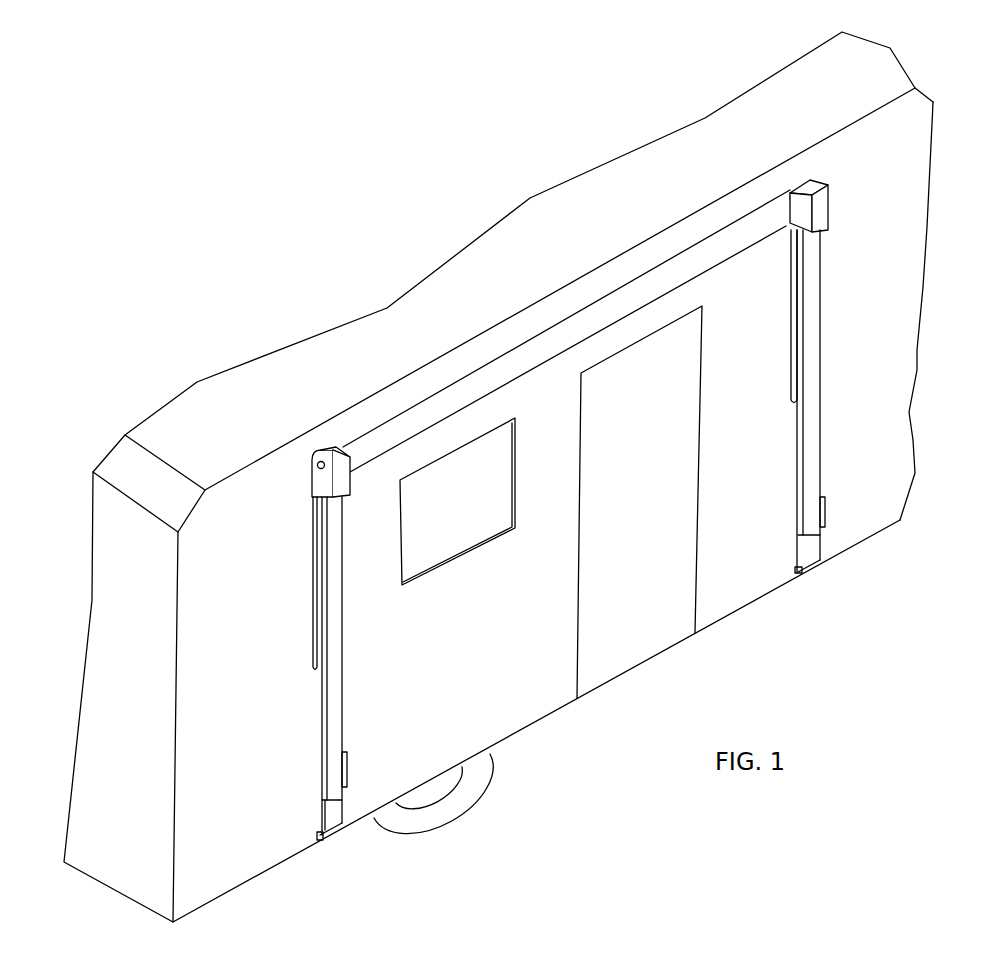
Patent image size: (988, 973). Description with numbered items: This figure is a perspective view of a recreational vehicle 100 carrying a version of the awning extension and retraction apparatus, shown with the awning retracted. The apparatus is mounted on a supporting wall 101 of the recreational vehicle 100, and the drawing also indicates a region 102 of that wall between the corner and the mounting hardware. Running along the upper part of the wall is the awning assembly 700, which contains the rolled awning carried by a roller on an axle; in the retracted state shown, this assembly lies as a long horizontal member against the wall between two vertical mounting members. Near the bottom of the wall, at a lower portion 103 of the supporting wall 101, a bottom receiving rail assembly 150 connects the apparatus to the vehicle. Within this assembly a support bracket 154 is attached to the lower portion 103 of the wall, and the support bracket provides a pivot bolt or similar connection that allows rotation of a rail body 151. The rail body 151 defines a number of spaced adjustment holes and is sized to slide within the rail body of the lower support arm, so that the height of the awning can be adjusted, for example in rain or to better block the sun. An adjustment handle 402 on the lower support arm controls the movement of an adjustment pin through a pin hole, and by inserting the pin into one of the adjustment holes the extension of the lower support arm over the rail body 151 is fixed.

The recreational vehicle 100 is at (240, 398).
The supporting wall 101 is at (218, 538).
The side wall 102 is at (287, 532).
The lower portion 103 is at (300, 827).
The bottom receiving rail assembly 150 is at (340, 842).
The rail body 151 is at (317, 813).
The support bracket 154 is at (343, 827).
The adjustment handle 402 is at (347, 758).
The awning assembly 700 is at (477, 383).